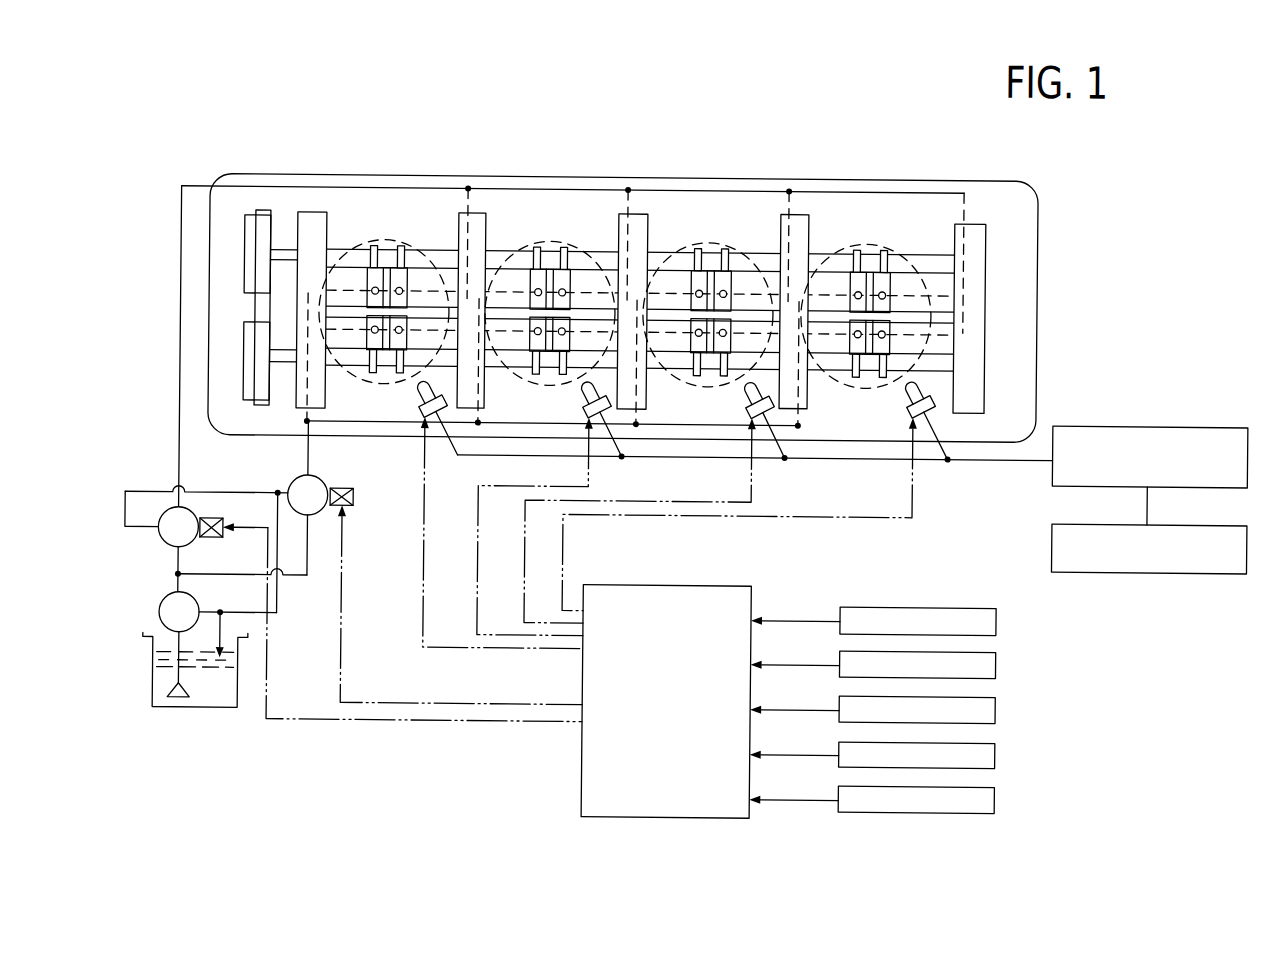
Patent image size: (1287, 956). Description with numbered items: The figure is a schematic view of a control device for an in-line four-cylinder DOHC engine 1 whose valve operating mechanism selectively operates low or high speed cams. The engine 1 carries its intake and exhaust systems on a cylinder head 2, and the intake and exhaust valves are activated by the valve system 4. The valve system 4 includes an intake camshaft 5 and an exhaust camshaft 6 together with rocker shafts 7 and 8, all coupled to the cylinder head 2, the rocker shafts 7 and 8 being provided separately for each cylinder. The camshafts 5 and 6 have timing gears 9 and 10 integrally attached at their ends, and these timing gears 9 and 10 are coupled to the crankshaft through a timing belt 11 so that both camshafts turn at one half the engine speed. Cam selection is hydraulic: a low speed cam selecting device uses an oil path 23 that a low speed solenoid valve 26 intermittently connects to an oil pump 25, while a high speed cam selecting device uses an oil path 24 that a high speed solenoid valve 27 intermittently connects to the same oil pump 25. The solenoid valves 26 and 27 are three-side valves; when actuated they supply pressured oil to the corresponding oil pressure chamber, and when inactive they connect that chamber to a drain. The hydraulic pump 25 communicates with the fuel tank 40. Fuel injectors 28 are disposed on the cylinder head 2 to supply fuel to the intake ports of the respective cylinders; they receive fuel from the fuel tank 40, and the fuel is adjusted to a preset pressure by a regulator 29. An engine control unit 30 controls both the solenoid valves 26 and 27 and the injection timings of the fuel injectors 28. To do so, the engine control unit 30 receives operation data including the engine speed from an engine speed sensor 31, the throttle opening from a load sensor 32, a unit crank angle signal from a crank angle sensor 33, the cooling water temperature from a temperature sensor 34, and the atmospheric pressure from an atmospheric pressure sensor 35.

The engine 1 is at (175, 172).
The cylinder head 2 is at (363, 178).
The valve system 4 is at (840, 231).
The intake camshaft 5 is at (945, 365).
The exhaust camshaft 6 is at (941, 255).
The rocker shaft 7 is at (948, 339).
The rocker shaft 8 is at (957, 295).
The timing gear 9 is at (250, 344).
The timing gear 10 is at (247, 249).
The timing belt 11 is at (261, 212).
The oil path 23 is at (368, 420).
The oil path 24 is at (424, 190).
The oil pump 25 is at (166, 604).
The low speed solenoid valve 26 is at (320, 495).
The high speed solenoid valve 27 is at (174, 544).
The fuel injector 28 is at (419, 397).
The regulator 29 is at (1211, 419).
The engine control unit 30 is at (726, 582).
The engine speed sensor 31 is at (1000, 620).
The load sensor 32 is at (1000, 661).
The crank angle sensor 33 is at (1000, 703).
The temperature sensor 34 is at (1001, 753).
The atmospheric pressure sensor 35 is at (1002, 794).
The fuel tank 40 is at (1203, 571).